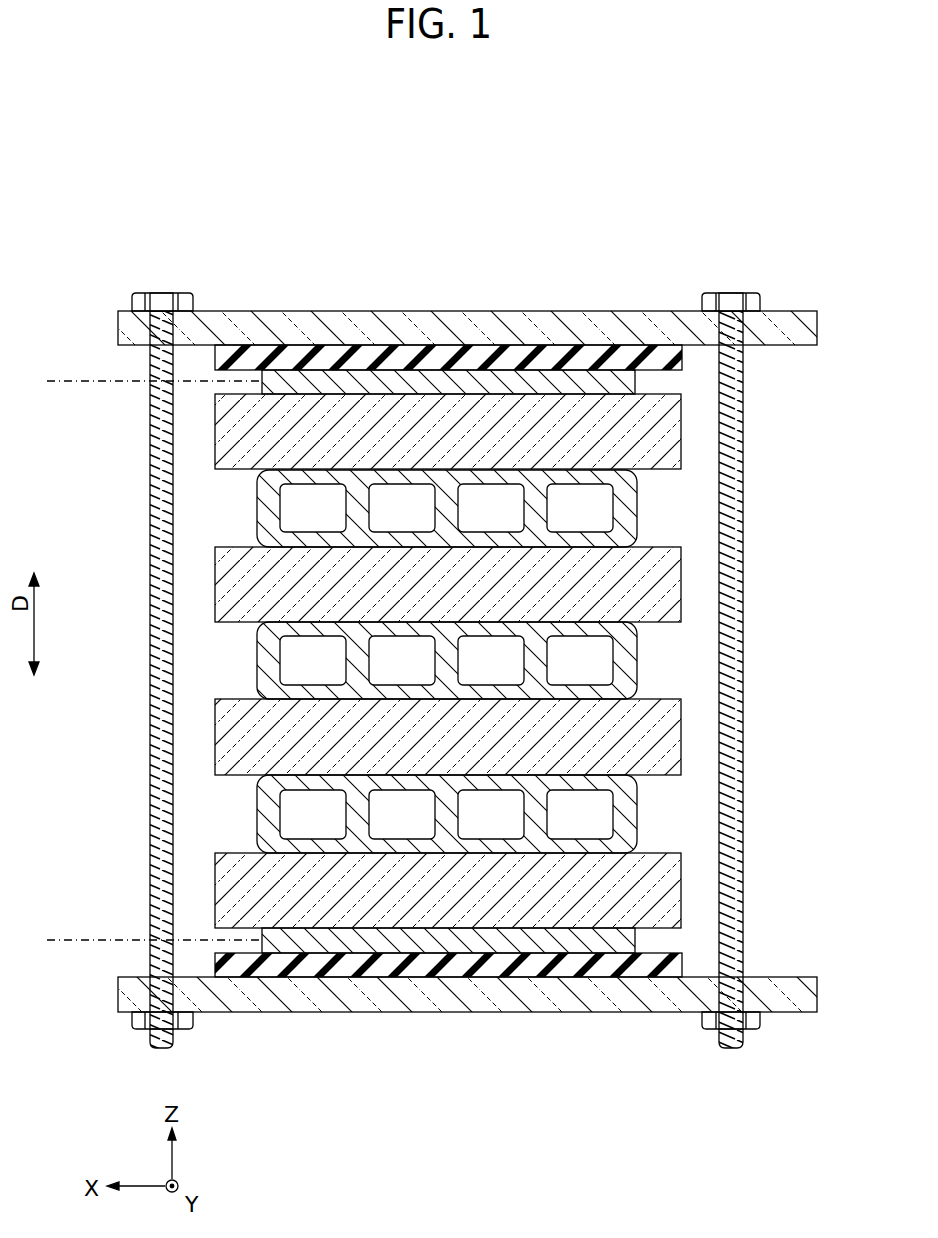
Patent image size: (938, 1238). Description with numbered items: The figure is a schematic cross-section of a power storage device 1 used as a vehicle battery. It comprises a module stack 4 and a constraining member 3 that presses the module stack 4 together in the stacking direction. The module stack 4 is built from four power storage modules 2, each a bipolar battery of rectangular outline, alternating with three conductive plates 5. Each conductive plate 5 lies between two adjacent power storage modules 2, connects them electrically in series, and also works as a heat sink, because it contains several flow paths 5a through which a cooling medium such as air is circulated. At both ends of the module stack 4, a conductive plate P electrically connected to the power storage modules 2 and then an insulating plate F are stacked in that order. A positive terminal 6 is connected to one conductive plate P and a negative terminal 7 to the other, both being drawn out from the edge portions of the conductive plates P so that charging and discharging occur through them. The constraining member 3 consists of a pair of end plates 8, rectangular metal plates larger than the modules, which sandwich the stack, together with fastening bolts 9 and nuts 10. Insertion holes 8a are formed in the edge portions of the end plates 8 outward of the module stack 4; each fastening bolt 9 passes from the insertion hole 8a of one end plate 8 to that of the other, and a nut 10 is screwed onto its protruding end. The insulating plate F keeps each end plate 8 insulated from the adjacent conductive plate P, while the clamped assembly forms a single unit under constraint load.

The power storage device 1 is at (143, 230).
The power storage module 2 is at (681, 432).
The constraining member 3 is at (812, 300).
The module stack 4 is at (697, 629).
The conductive plate 5 is at (637, 532).
The flow path 5a is at (286, 506).
The positive terminal 6 is at (60, 939).
The negative terminal 7 is at (60, 380).
The end plate 8 is at (482, 311).
The insertion hole 8a is at (160, 330).
The fastening bolt 9 is at (150, 618).
The nut 10 is at (145, 1020).
The insulating plate F is at (682, 357).
The conductive plate P is at (635, 381).